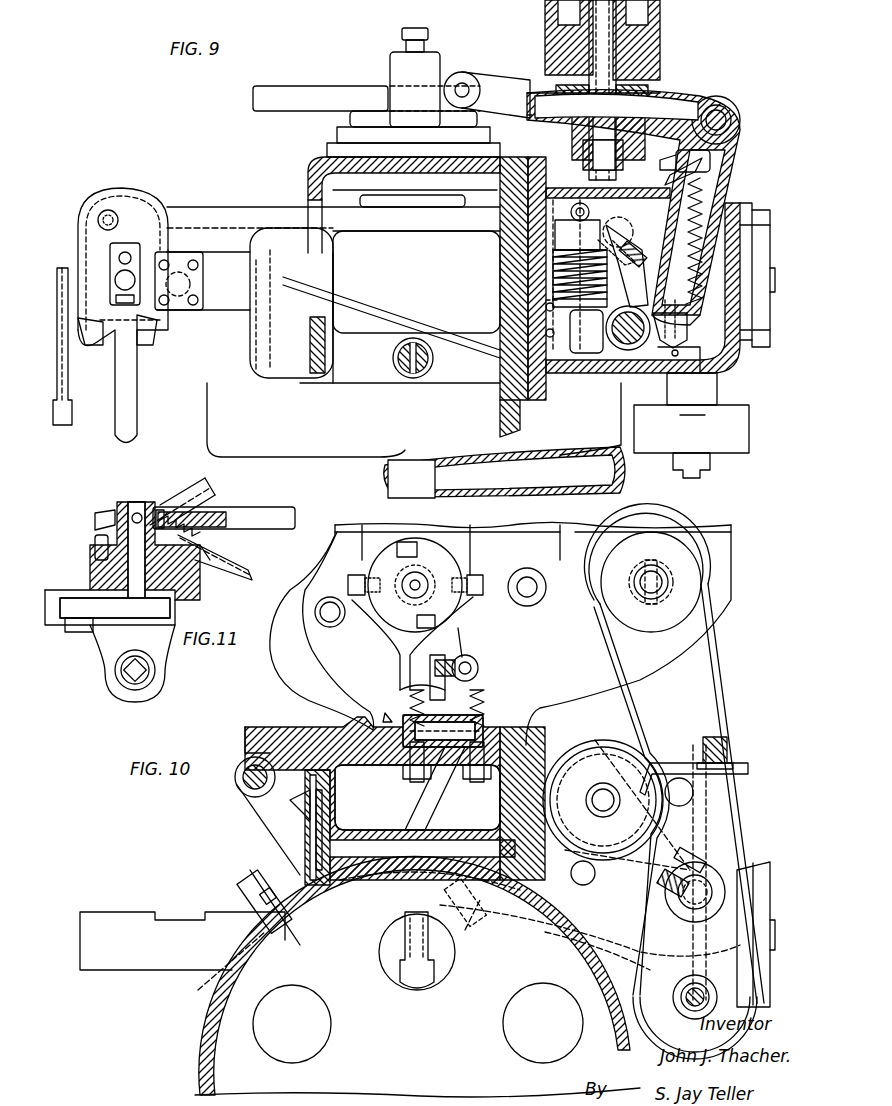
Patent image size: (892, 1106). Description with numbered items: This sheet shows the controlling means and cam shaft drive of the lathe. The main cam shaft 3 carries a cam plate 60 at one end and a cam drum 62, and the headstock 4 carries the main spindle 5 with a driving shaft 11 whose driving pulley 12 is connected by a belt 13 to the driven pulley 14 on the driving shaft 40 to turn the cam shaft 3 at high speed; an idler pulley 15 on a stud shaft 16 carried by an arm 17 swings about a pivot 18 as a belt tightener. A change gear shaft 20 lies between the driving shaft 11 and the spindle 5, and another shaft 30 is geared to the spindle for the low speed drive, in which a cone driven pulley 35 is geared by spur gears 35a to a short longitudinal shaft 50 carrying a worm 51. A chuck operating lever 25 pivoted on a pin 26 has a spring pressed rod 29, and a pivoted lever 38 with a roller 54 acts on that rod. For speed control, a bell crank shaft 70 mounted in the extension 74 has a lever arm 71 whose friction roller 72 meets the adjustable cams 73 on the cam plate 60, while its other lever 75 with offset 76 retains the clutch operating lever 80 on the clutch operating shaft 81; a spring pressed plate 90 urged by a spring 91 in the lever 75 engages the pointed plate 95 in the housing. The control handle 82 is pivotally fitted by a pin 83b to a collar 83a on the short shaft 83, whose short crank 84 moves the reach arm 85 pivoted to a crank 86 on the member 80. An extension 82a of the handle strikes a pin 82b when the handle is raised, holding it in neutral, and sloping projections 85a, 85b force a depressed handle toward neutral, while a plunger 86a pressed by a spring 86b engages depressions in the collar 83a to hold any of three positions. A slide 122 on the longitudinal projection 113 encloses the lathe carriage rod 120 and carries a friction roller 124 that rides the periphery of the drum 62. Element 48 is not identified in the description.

In FIG. 9, the main cam shaft 3 is at (388, 482).
In FIG. 10, the headstock 4 is at (315, 662).
In FIG. 10, the main spindle 5 is at (403, 578).
In FIG. 10, the driving shaft 11 is at (658, 580).
In FIG. 10, the driving pulley 12 is at (682, 596).
In FIG. 10, the belt 13 is at (722, 680).
In FIG. 9, the driven pulley 14 is at (735, 445).
In FIG. 10, the driven pulley 14 is at (748, 990).
In FIG. 10, the idler pulley 15 is at (585, 745).
In FIG. 10, the stud shaft 16 is at (605, 798).
In FIG. 10, the arm 17 is at (690, 838).
In FIG. 10, the pivot 18 is at (705, 888).
In FIG. 10, the change gear shaft 20 is at (527, 585).
In FIG. 10, the chuck operating lever 25 is at (452, 650).
In FIG. 10, the pin 26 is at (385, 722).
In FIG. 10, the operating rod 29 is at (478, 668).
In FIG. 10, the shaft 30 is at (328, 598).
In FIG. 9, the cone driven pulley 35 is at (640, 50).
In FIG. 9, the spur gears 35a is at (556, 88).
In FIG. 10, the pivoted lever 38 is at (438, 806).
In FIG. 9, the driving shaft 40 is at (690, 472).
In FIG. 10, the driving shaft 40 is at (710, 985).
In FIG. 9, the rod 48 is at (68, 380).
In FIG. 9, the short longitudinal shaft 50 is at (575, 228).
In FIG. 9, the worm 51 is at (553, 292).
In FIG. 10, the roller 54 is at (405, 978).
In FIG. 9, the cam plate 60 is at (300, 94).
In FIG. 9, the cam drum 62 is at (215, 425).
In FIG. 10, the cam drum 62 is at (210, 1062).
In FIG. 9, the bell crank lever shaft 70 is at (732, 122).
In FIG. 10, the bell crank lever shaft 70 is at (735, 830).
In FIG. 9, the lever arm 71 is at (670, 102).
In FIG. 10, the lever arm 71 is at (612, 955).
In FIG. 9, the friction roller 72 is at (480, 76).
In FIG. 10, the friction roller 72 is at (487, 912).
In FIG. 9, the adjustable cams 73 is at (412, 66).
In FIG. 9, the extension 74 is at (742, 268).
In FIG. 10, the extension 74 is at (570, 905).
In FIG. 9, the lever 75 is at (712, 222).
In FIG. 9, the offset 76 is at (632, 236).
In FIG. 9, the clutch operating lever 80 is at (660, 285).
In FIG. 9, the clutch operating shaft 81 is at (625, 345).
In FIG. 9, the handle 82 is at (128, 396).
In FIG. 11, the handle 82 is at (280, 510).
In FIG. 9, the extension 82a is at (105, 248).
In FIG. 11, the extension 82a is at (105, 512).
In FIG. 11, the pin 82b is at (97, 545).
In FIG. 11, the short shaft 83 is at (135, 572).
In FIG. 11, the collar 83a is at (122, 505).
In FIG. 11, the pin 83b is at (140, 517).
In FIG. 9, the short crank 84 is at (125, 230).
In FIG. 11, the short crank 84 is at (95, 640).
In FIG. 9, the reach arm 85 is at (272, 212).
In FIG. 9, the projection 85a is at (155, 336).
In FIG. 11, the projection 85a is at (215, 570).
In FIG. 9, the projection 85b is at (100, 338).
In FIG. 9, the crank 86 is at (722, 270).
In FIG. 11, the plunger 86a is at (212, 520).
In FIG. 11, the spring 86b is at (210, 532).
In FIG. 9, the spring pressed plate 90 is at (682, 322).
In FIG. 9, the spring 91 is at (735, 288).
In FIG. 9, the pointed plate 95 is at (666, 362).
In FIG. 10, the longitudinal projection 113 is at (292, 862).
In FIG. 10, the lathe carriage rod 120 is at (240, 780).
In FIG. 10, the slide 122 is at (300, 838).
In FIG. 10, the friction roller 124 is at (200, 987).